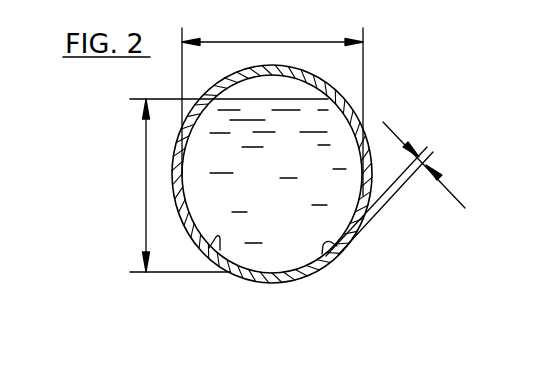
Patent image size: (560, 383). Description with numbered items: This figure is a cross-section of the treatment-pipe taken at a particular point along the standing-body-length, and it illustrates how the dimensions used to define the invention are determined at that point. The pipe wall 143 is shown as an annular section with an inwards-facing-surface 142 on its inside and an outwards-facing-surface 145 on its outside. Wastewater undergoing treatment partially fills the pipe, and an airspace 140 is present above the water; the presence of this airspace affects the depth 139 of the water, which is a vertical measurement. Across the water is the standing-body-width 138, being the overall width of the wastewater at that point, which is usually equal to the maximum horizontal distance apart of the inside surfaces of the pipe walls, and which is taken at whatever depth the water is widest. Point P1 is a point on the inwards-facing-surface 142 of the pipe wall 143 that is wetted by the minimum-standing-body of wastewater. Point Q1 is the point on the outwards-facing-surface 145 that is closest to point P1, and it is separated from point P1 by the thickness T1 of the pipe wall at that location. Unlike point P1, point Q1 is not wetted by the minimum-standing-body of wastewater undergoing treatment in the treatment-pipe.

The standing-body-width 138 is at (270, 31).
The depth 139 is at (144, 183).
The airspace 140 is at (273, 90).
The inwards-facing-surface 142 is at (216, 265).
The pipe wall 143 is at (288, 279).
The outwards-facing-surface 145 is at (215, 238).
The point Q1 is at (336, 247).
The point P1 is at (322, 268).
The thickness T1 is at (456, 196).